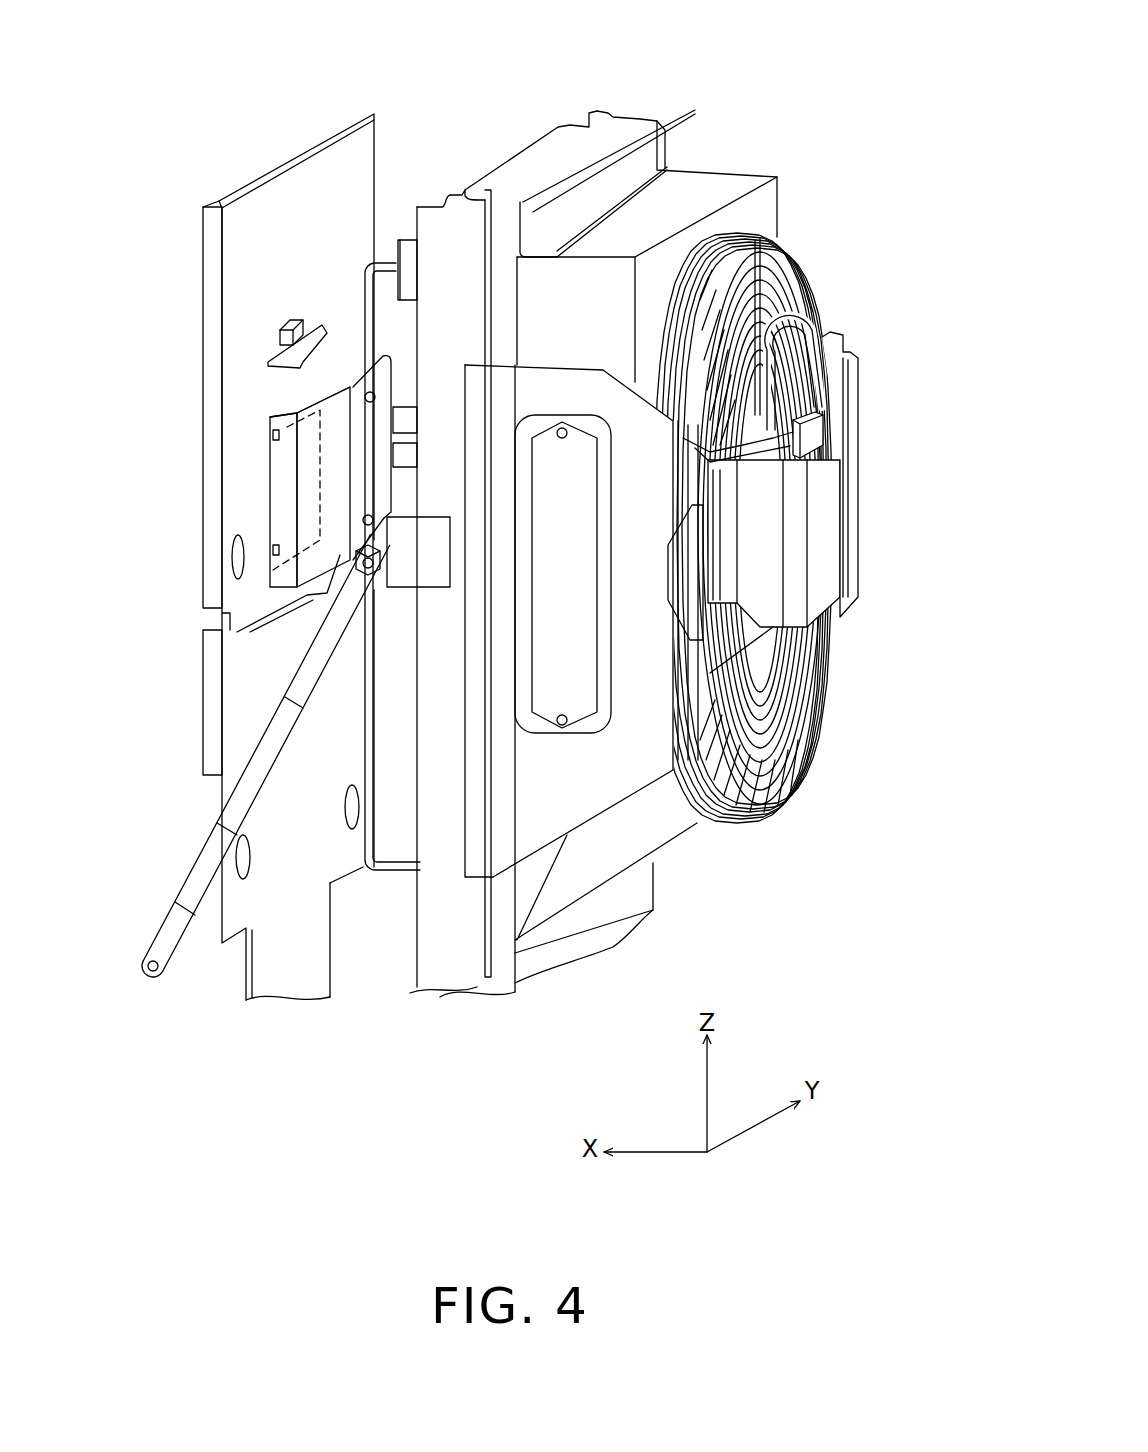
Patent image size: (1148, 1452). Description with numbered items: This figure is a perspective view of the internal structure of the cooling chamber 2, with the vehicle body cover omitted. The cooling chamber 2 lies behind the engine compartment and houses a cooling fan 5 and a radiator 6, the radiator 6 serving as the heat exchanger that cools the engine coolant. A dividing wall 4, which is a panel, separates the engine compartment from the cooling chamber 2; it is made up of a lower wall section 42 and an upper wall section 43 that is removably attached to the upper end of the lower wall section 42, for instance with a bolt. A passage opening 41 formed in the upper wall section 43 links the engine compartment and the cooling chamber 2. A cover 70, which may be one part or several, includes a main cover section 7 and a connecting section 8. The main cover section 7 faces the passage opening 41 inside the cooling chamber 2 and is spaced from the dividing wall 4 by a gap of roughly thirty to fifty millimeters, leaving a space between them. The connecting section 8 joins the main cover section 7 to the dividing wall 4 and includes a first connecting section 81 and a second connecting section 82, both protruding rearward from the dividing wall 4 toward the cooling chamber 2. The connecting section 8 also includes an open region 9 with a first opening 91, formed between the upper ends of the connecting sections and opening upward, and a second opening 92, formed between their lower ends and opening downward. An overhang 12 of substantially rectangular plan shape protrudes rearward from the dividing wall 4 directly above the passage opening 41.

The cooling chamber 2 is at (428, 160).
The dividing wall 4 is at (188, 410).
The cooling fan 5 is at (795, 257).
The radiator 6 is at (545, 137).
The main cover section 7 is at (345, 474).
The connecting section 8 is at (268, 574).
The open region 9 is at (316, 397).
The overhang 12 is at (330, 338).
The passage opening 41 is at (283, 491).
The lower wall section 42 is at (215, 724).
The upper wall section 43 is at (215, 378).
The cover 70 is at (279, 410).
The first connecting section 81 is at (285, 521).
The second connecting section 82 is at (382, 265).
The first opening 91 is at (278, 405).
The second opening 92 is at (221, 623).